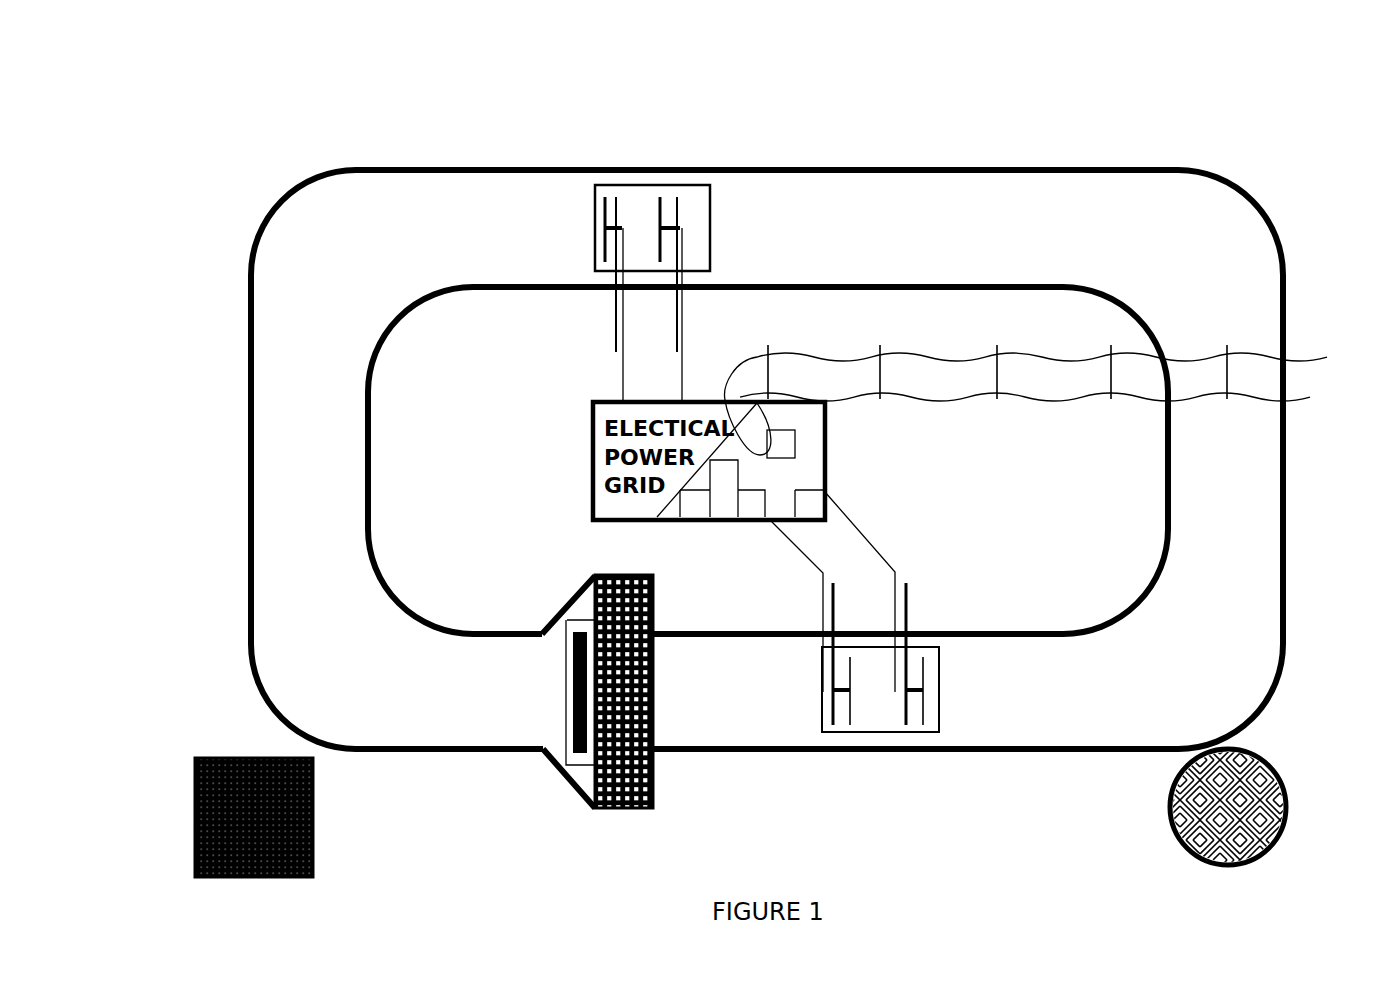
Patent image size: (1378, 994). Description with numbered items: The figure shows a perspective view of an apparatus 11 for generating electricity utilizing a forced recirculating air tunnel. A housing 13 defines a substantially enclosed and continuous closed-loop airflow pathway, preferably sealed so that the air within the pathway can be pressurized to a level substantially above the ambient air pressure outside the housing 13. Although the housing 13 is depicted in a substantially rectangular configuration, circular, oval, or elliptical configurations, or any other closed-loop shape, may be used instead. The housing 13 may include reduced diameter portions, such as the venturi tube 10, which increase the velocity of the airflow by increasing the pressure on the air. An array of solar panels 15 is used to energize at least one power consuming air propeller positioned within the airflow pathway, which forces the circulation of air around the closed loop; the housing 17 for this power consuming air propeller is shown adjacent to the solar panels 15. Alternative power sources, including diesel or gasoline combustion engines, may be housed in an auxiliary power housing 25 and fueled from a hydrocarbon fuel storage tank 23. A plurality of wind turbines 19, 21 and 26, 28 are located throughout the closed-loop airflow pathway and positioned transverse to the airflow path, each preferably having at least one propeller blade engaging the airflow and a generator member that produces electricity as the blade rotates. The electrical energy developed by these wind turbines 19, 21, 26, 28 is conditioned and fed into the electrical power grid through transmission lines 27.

The venturi tube 10 is at (558, 612).
The apparatus 11 is at (822, 228).
The housing 13 is at (422, 230).
The array of solar panels 15 is at (657, 783).
The housing for power consuming air propeller 17 is at (577, 702).
The wind turbine 19 is at (853, 692).
The wind turbine 21 is at (927, 692).
The hydrocarbon fuel storage tank 23 is at (1170, 803).
The auxiliary power housing 25 is at (313, 802).
The wind turbine 26 is at (594, 232).
The transmission lines 27 is at (828, 362).
The wind turbine 28 is at (650, 230).